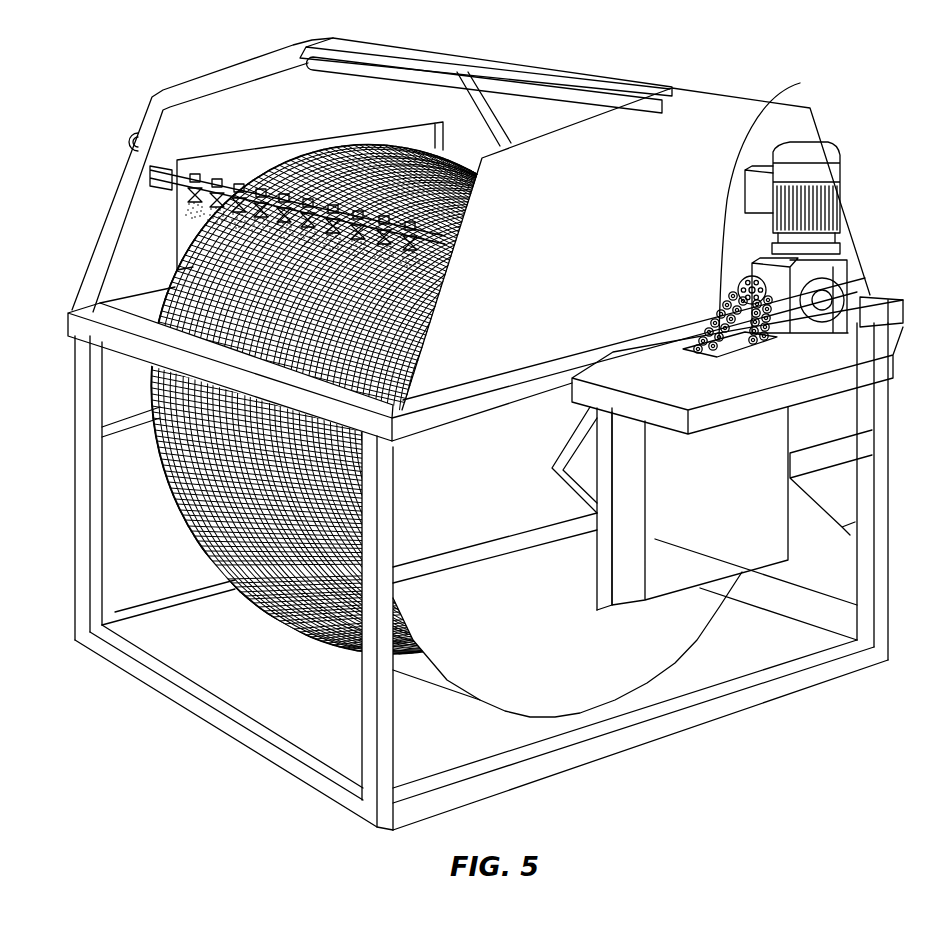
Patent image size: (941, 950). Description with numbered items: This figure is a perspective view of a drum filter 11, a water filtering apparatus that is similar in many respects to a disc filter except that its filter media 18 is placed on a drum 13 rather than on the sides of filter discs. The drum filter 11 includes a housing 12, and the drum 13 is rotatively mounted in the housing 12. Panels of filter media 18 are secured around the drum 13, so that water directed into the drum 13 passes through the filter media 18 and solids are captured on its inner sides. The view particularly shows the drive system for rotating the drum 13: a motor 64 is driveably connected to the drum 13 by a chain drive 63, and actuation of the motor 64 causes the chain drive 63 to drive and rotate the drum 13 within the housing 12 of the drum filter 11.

The drum filter 11 is at (604, 46).
The housing 12 is at (668, 137).
The drum 13 is at (570, 657).
The filter media 18 is at (263, 523).
The chain drive 63 is at (800, 83).
The motor 64 is at (828, 288).